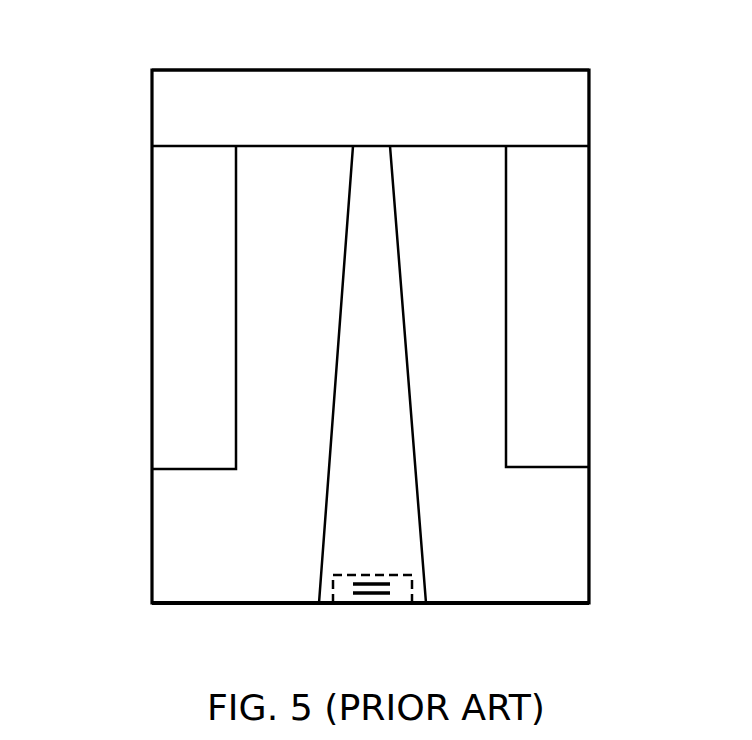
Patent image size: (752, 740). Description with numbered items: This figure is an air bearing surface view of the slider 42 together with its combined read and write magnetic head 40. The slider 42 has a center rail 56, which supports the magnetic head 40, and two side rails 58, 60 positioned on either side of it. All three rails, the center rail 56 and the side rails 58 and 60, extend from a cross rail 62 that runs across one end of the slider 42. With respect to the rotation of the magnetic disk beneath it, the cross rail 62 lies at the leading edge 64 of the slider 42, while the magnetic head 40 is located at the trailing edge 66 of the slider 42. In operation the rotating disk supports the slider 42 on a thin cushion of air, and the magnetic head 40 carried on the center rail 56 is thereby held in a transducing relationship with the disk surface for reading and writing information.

The magnetic head 40 is at (343, 606).
The slider 42 is at (128, 548).
The center rail 56 is at (358, 253).
The side rail 58 is at (168, 216).
The side rail 60 is at (563, 214).
The cross rail 62 is at (283, 80).
The leading edge 64 is at (437, 70).
The trailing edge 66 is at (493, 604).